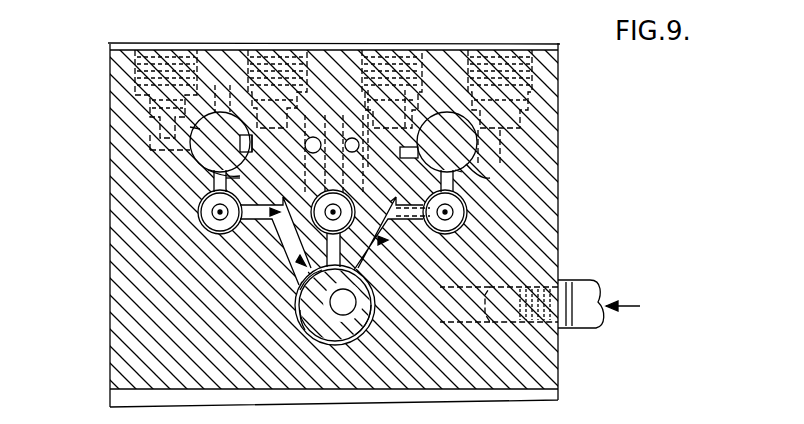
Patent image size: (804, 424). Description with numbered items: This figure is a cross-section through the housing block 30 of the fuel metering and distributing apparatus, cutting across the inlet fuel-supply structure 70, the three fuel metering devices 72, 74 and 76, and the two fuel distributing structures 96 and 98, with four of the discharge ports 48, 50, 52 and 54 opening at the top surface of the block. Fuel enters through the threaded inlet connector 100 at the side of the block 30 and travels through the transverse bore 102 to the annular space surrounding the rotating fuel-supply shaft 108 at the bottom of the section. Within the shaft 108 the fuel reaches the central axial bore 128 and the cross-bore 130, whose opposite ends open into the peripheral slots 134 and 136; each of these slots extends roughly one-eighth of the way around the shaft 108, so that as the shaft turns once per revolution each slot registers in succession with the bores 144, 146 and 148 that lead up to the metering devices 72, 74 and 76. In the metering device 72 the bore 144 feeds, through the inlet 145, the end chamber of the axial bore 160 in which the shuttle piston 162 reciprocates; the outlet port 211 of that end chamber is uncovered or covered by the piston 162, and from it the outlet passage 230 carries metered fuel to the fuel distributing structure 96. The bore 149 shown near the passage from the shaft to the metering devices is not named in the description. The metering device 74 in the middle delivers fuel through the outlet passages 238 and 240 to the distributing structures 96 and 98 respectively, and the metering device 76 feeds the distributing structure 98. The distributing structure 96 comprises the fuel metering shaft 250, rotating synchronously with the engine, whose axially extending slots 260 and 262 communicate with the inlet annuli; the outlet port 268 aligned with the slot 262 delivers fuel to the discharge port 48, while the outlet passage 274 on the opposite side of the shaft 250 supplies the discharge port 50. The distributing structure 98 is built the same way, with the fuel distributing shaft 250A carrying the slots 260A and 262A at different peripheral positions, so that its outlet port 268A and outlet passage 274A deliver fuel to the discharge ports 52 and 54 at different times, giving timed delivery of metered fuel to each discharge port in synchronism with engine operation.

The housing block 30 is at (115, 238).
The discharge port 48 is at (182, 50).
The discharge port 50 is at (294, 50).
The discharge port 52 is at (406, 50).
The discharge port 54 is at (516, 50).
The inlet fuel-supply structure 70 is at (342, 345).
The fuel metering device 72 is at (180, 271).
The fuel metering device 74 is at (376, 250).
The fuel metering device 76 is at (457, 232).
The fuel distributing structure 96 is at (208, 170).
The fuel distributing structure 98 is at (466, 164).
The threaded inlet connector 100 is at (588, 288).
The transverse bore 102 is at (472, 313).
The fuel-supply shaft 108 is at (316, 338).
The central axial bore 128 is at (302, 308).
The cross-bore 130 is at (306, 303).
The peripheral slot 134 is at (312, 330).
The peripheral slot 136 is at (367, 320).
The bore 144 is at (305, 268).
The inlet 145 is at (305, 248).
The bore 146 is at (366, 262).
The bore 148 is at (383, 241).
The passage 149 is at (385, 224).
The axial bore 160 is at (210, 226).
The shuttle piston 162 is at (218, 236).
The outlet port 211 is at (203, 190).
The outlet passage 230 is at (212, 180).
The outlet passage 238 is at (319, 136).
The outlet passage 240 is at (355, 132).
The fuel metering shaft 250 is at (190, 127).
The fuel distributing shaft 250A is at (455, 170).
The slot 260 is at (245, 115).
The slot 260A is at (433, 110).
The slot 262 is at (222, 79).
The slot 262A is at (442, 115).
The outlet port 268 is at (188, 143).
The outlet port 268A is at (386, 197).
The outlet passage 274 is at (281, 169).
The outlet passage 274A is at (500, 148).